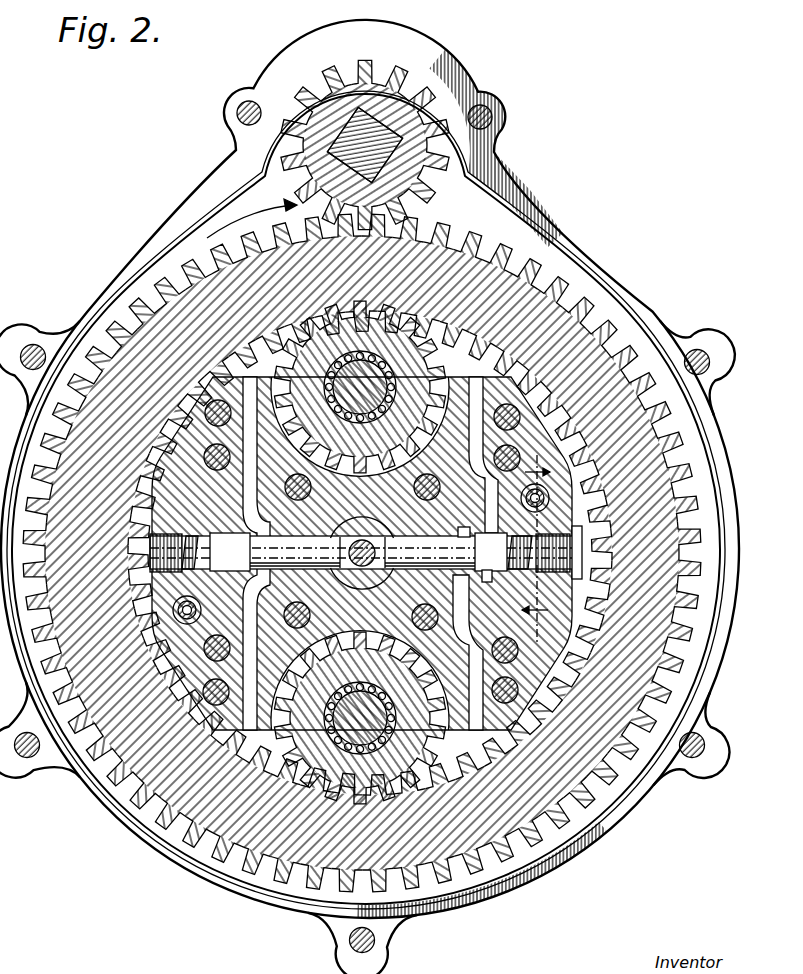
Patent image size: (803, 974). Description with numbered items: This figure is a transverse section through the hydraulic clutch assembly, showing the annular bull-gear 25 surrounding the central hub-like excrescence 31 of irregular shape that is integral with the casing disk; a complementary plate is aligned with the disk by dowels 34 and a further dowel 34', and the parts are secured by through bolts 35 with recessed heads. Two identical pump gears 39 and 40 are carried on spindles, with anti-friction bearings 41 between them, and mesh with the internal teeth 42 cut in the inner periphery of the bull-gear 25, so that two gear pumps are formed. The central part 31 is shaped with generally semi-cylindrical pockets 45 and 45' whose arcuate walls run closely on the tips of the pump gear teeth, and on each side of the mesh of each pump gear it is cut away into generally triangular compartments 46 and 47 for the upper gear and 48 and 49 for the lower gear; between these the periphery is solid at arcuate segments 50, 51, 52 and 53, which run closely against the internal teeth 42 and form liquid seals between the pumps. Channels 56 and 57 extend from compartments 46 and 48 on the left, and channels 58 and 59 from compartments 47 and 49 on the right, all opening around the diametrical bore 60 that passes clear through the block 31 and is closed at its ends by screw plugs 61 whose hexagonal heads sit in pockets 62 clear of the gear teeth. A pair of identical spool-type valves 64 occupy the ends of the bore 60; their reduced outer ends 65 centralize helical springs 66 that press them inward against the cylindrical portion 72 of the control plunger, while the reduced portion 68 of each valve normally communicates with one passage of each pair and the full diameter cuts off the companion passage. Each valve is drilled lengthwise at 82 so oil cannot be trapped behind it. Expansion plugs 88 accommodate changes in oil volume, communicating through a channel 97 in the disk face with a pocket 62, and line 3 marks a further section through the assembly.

The section line 3 is at (536, 548).
The bull-gear 25 is at (425, 222).
The central hub-like excrescence 31 is at (530, 370).
The dowels 34 is at (364, 553).
The bolt 34' is at (360, 563).
The through bolts 35 is at (565, 680).
The pump gear 39 is at (445, 306).
The pump gear 40 is at (464, 666).
The anti-friction bearings 41 is at (357, 360).
The internal teeth 42 is at (375, 300).
The pocket 45 is at (433, 444).
The pocket 45' is at (446, 634).
The triangular compartment 46 is at (262, 335).
The triangular compartment 47 is at (520, 256).
The triangular compartment 48 is at (276, 760).
The triangular compartment 49 is at (456, 760).
The arcuate segment 50 is at (162, 386).
The arcuate segment 51 is at (160, 712).
The arcuate segment 52 is at (582, 433).
The arcuate segment 53 is at (548, 686).
The channel 56 is at (258, 463).
The channel 57 is at (258, 653).
The channel 58 is at (470, 466).
The channel 59 is at (455, 600).
The diametrical bore 60 is at (362, 553).
The screw plugs 61 is at (608, 516).
The pockets 62 is at (608, 600).
The valves 64 is at (335, 571).
The reduced outer ends 65 is at (204, 532).
The helical springs 66 is at (190, 534).
The portion of reduced diameter 68 is at (462, 527).
The reduced cylindrical portion 72 is at (380, 536).
The longitudinal drilling 82 is at (288, 572).
The expansion plugs 88 is at (597, 456).
The channel 97 is at (602, 483).